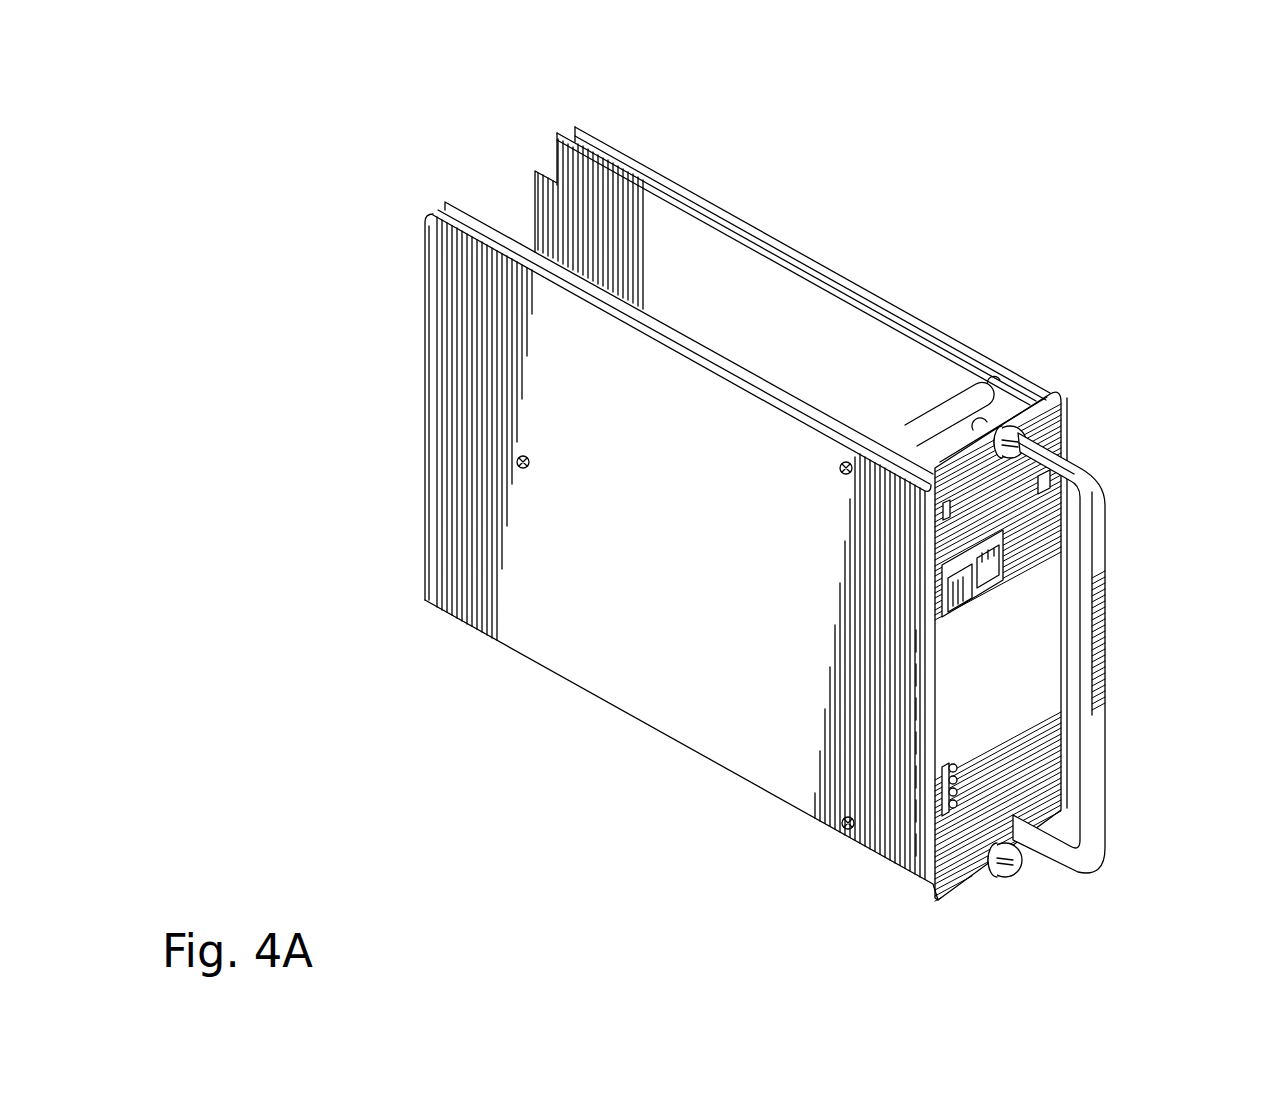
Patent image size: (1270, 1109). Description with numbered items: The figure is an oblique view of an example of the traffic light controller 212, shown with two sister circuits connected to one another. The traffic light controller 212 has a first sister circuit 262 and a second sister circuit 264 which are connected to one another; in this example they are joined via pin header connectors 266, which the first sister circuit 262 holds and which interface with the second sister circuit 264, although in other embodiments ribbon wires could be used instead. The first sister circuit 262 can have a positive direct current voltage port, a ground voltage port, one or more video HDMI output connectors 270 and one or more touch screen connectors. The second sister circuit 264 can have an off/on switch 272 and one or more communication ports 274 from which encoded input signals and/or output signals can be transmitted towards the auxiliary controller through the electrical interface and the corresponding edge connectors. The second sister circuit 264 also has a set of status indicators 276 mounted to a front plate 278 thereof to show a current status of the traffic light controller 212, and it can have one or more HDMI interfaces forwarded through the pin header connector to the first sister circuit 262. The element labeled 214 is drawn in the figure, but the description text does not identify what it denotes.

The traffic light controller 212 is at (1082, 283).
The cooling fins 214 is at (535, 190).
The first sister circuit 262 is at (813, 257).
The second sister circuit 264 is at (685, 325).
The pin header connectors 266 is at (945, 410).
The video HDMI output connectors 270 is at (1045, 495).
The off/on switch 272 is at (940, 513).
The communication ports 274 is at (943, 590).
The status indicators 276 is at (945, 800).
The front plate 278 is at (1038, 657).